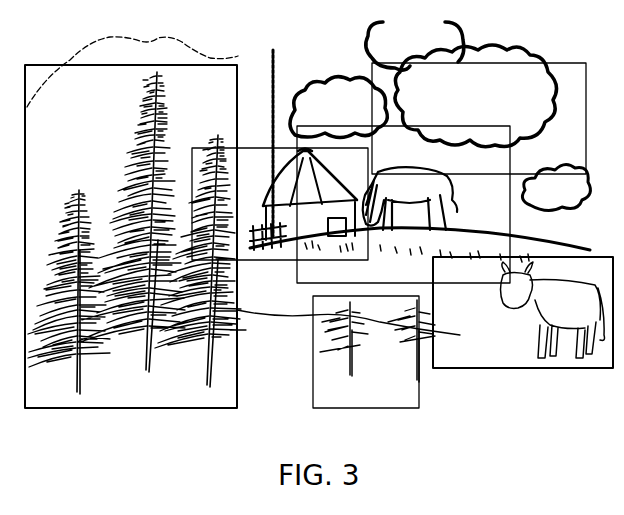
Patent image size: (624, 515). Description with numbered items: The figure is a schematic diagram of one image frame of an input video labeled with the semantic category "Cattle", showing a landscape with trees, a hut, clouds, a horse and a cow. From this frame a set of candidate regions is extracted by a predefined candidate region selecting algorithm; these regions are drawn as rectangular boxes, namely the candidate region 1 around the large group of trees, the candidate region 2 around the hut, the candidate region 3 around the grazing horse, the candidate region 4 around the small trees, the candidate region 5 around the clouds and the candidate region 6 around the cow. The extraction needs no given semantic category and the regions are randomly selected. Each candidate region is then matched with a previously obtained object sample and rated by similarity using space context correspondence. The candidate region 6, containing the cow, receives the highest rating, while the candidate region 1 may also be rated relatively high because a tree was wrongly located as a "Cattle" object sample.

The candidate region 1 is at (177, 15).
The candidate region 2 is at (282, 97).
The candidate region 3 is at (358, 87).
The candidate region 4 is at (448, 418).
The candidate region 5 is at (475, 22).
The candidate region 6 is at (500, 400).